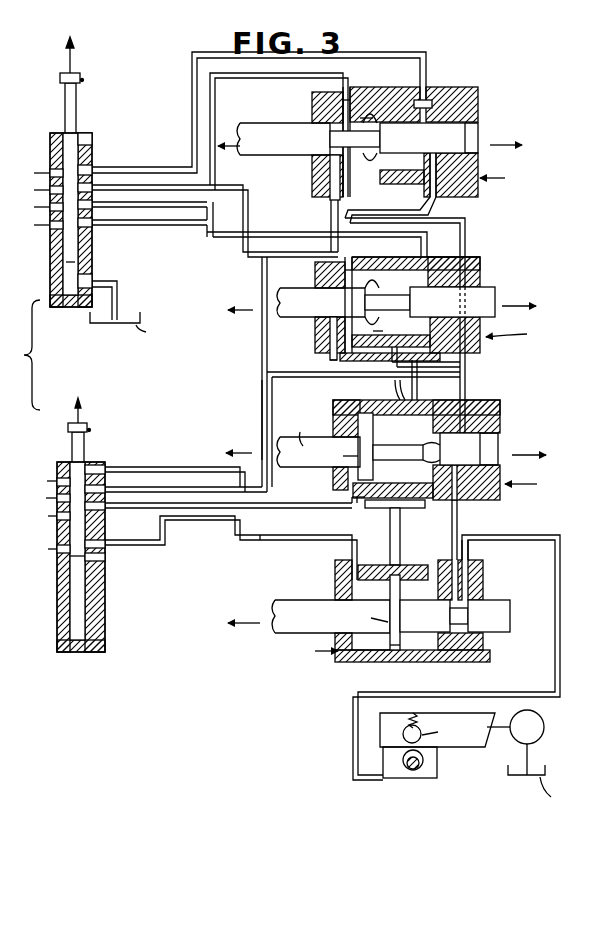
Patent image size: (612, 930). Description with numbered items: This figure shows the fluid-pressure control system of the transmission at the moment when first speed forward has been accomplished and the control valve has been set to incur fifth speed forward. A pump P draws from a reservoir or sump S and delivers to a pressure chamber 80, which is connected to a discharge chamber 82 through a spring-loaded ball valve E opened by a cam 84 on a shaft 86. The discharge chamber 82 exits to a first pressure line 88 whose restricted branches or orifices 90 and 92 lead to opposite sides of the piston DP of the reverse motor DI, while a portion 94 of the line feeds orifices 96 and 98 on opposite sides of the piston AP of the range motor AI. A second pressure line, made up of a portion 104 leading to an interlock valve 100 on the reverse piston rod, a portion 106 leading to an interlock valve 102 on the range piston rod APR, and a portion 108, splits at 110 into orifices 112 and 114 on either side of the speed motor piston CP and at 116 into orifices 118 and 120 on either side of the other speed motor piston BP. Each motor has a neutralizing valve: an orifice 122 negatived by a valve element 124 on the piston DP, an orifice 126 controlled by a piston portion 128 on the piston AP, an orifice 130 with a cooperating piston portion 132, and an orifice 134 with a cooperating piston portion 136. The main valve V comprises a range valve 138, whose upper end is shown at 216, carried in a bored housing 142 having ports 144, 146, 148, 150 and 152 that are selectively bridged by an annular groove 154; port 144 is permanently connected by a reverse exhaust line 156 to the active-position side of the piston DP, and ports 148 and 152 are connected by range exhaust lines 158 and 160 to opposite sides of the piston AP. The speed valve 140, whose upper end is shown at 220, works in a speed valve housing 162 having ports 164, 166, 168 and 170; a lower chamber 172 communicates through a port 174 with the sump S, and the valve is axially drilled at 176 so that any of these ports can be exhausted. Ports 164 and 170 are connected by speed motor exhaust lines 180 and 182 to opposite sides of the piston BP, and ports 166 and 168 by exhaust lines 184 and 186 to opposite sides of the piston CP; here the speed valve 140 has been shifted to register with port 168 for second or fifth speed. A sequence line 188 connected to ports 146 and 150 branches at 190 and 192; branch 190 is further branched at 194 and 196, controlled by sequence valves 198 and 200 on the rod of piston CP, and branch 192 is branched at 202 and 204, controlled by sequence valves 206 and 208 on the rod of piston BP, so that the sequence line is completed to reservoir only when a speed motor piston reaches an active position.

The valve stem pin 220 is at (66, 55).
The speed valve 140 is at (62, 100).
The speed valve housing 162 is at (92, 140).
The port 164 is at (92, 170).
The port 166 is at (92, 187).
The port 168 is at (92, 205).
The port 170 is at (92, 223).
The chamber 172 is at (62, 258).
The port 174 is at (93, 279).
The axial bore 176 is at (62, 275).
The speed motor exhaust line 180 is at (192, 95).
The speed motor exhaust line 182 is at (216, 82).
The speed motor exhaust line 184 is at (228, 242).
The speed motor exhaust line 186 is at (248, 194).
The sequence line 188 is at (262, 403).
The sequence line branch 190 is at (280, 377).
The sequence line branch 192 is at (262, 358).
The branch 194 is at (336, 366).
The branch 196 is at (442, 365).
The sequence valve 198 is at (345, 304).
The sequence valve 200 is at (416, 303).
The branch 202 is at (331, 208).
The branch 204 is at (444, 199).
The sequence valve 206 is at (330, 141).
The sequence valve 208 is at (388, 141).
The line branch point 116 is at (466, 228).
The restricted branch 118 is at (330, 185).
The restricted branch 120 is at (430, 172).
The orifice 130 is at (386, 257).
The piston portion 132 is at (384, 281).
The orifice 134 is at (386, 100).
The piston portion 136 is at (352, 105).
The restricted branch 112 is at (330, 346).
The restricted branch 114 is at (432, 345).
The second pressure line portion 108 is at (466, 383).
The split point 110 is at (419, 392).
The orifice 126 is at (397, 396).
The piston portion 128 is at (360, 425).
The interlock valve 102 is at (440, 451).
The restricted branch 98 is at (429, 490).
The restricted branch 96 is at (360, 502).
The line portion 94 is at (398, 515).
The restricted branch 90 is at (373, 565).
The second pressure line portion 106 is at (459, 523).
The second pressure line portion 104 is at (469, 553).
The restricted branch 92 is at (405, 620).
The interlock valve 100 is at (470, 620).
The orifice 122 is at (396, 652).
The valve element 124 is at (385, 653).
The first pressure line 88 is at (560, 645).
The pressure chamber 80 is at (482, 738).
The discharge chamber 82 is at (388, 779).
The cam 84 is at (422, 768).
The shaft 86 is at (415, 771).
The range valve 138 is at (68, 437).
The bored housing 142 is at (64, 652).
The valve port 144 is at (96, 465).
The valve port 146 is at (98, 487).
The valve port 148 is at (100, 503).
The valve port 150 is at (102, 543).
The valve port 152 is at (100, 556).
The annular groove 154 is at (70, 560).
The reverse exhaust line 156 is at (264, 541).
The range exhaust line 158 is at (190, 509).
The range exhaust line 160 is at (165, 552).
The valve stem pin 216 is at (80, 410).
The main valve V is at (47, 271).
The reservoir or sump S is at (123, 327).
The piston BP is at (367, 142).
The piston CP is at (384, 309).
The range motor AI is at (389, 450).
The reverse motor DI is at (359, 611).
The piston AP is at (372, 454).
The piston rod APR is at (318, 440).
The piston DP is at (331, 616).
The valve E is at (426, 733).
The pump P is at (534, 758).